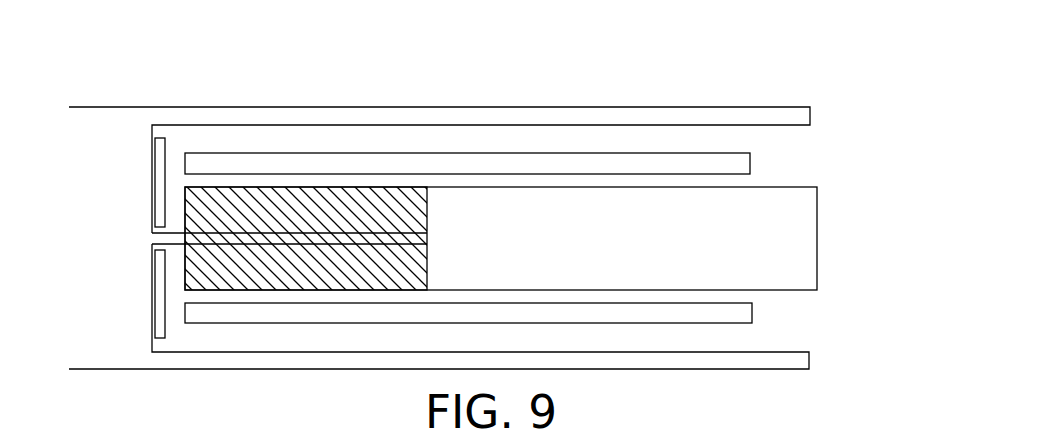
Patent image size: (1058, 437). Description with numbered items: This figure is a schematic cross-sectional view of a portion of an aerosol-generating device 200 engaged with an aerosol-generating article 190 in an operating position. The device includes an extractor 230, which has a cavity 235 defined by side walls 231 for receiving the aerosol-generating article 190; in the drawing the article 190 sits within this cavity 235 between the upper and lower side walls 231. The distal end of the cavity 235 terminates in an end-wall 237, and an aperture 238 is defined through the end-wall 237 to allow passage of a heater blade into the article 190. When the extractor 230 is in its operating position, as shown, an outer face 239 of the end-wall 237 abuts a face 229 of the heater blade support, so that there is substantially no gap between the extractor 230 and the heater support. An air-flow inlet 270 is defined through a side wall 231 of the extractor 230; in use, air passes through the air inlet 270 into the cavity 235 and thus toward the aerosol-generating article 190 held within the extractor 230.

The aerosol-generating device 200 is at (599, 77).
The air-flow inlet 270 is at (175, 150).
The face of the heater blade support 229 is at (152, 349).
The aperture 238 is at (152, 232).
The end-wall 237 is at (152, 179).
The outer face of the end-wall 239 is at (155, 292).
The extractor 230 is at (752, 160).
The side walls 231 is at (467, 160).
The cavity 235 is at (743, 299).
The aerosol-generating article 190 is at (830, 215).